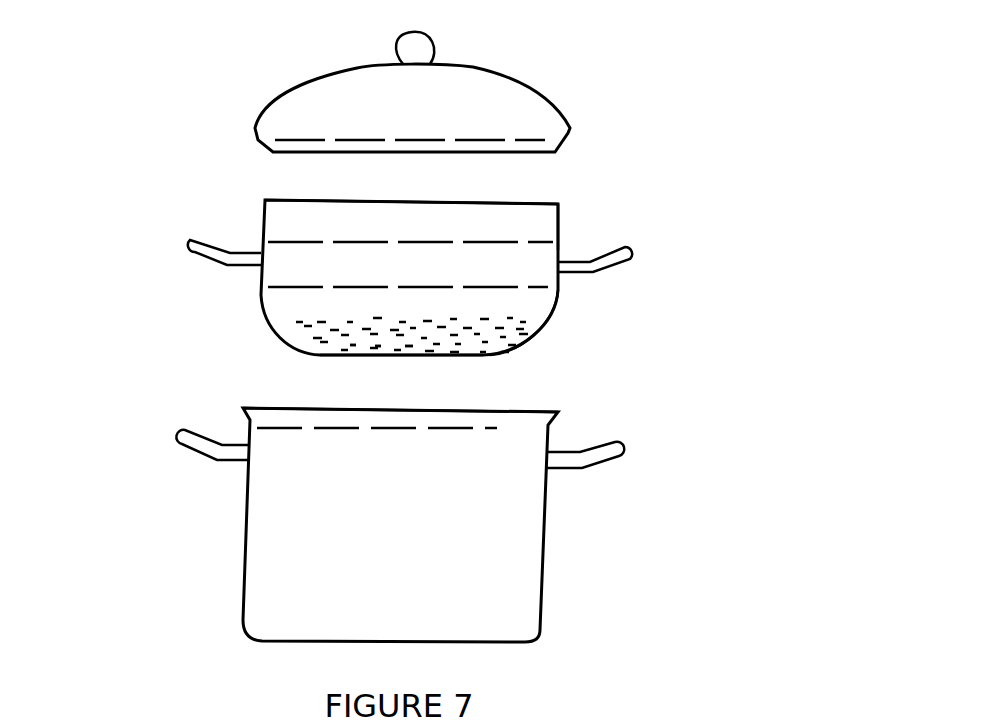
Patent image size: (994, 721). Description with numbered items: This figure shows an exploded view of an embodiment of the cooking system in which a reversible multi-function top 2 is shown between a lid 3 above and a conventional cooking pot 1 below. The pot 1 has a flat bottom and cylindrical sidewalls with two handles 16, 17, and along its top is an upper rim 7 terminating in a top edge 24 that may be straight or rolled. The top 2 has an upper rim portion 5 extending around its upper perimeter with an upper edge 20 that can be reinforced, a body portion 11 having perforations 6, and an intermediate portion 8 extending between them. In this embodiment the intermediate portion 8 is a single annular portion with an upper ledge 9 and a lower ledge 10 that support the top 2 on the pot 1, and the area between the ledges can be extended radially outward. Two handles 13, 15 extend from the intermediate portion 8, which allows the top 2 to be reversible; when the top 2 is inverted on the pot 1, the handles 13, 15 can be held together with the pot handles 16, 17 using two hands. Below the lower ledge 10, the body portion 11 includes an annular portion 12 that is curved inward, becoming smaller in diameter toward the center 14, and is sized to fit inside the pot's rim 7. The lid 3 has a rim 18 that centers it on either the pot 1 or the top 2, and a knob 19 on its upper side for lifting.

The pot 1 is at (451, 496).
The reversible multi-function top 2 is at (465, 287).
The lid 3 is at (491, 81).
The upper rim portion 5 is at (295, 218).
The perforations 6 is at (310, 323).
The upper rim 7 is at (512, 420).
The intermediate portion 8 is at (305, 263).
The upper ledge 9 is at (560, 245).
The lower ledge 10 is at (556, 291).
The body portion 11 is at (405, 320).
The annular portion 12 is at (262, 302).
The top handle 13 is at (612, 265).
The center 14 is at (408, 354).
The top handle 15 is at (196, 248).
The pot handle 16 is at (594, 460).
The pot handle 17 is at (195, 445).
The lid rim 18 is at (548, 148).
The knob 19 is at (430, 43).
The upper edge 20 is at (485, 203).
The top edge 24 is at (405, 407).